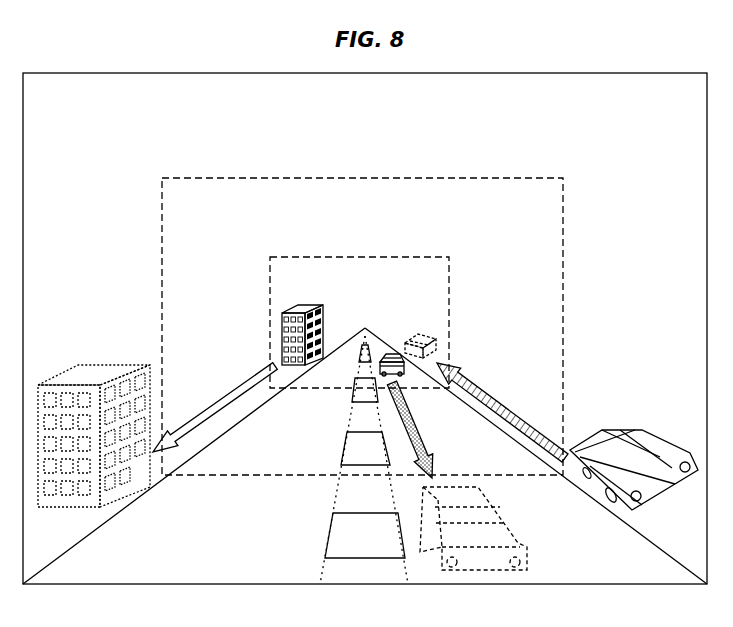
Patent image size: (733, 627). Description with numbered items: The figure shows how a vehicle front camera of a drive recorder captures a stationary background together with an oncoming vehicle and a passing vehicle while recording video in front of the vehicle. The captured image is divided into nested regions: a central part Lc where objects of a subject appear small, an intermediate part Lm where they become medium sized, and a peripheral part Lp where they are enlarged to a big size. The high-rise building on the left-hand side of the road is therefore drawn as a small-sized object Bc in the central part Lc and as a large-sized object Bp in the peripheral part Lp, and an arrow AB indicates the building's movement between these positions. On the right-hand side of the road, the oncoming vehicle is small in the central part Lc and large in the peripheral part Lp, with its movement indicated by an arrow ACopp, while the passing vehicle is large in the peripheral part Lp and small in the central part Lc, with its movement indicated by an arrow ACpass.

The peripheral part of the image Lp is at (657, 73).
The intermediate part of the image Lm is at (530, 178).
The central part of the image Lc is at (415, 257).
The large-sized object of the high-rise building Bp is at (71, 369).
The small-sized object of the high-rise building Bc is at (309, 304).
The motion vector of building AB is at (215, 401).
The motion vector of oncoming vehicle ACopp is at (430, 429).
The motion vector of passing vehicle ACpass is at (502, 412).